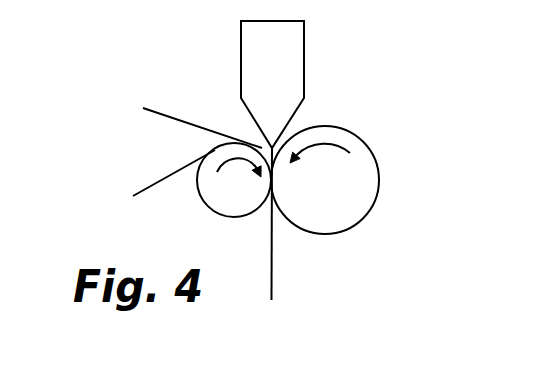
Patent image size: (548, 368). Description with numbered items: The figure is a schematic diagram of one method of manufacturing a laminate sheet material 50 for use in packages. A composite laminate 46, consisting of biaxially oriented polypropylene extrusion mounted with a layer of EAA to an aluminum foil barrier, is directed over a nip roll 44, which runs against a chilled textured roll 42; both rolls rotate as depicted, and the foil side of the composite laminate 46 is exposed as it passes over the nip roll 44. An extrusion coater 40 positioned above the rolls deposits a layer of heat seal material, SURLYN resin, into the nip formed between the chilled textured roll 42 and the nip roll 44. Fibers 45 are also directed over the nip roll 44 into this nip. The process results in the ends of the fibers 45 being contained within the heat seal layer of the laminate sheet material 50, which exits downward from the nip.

The extrusion coater 40 is at (298, 46).
The chilled textured roll 42 is at (370, 181).
The nip roll 44 is at (218, 203).
The fibers 45 is at (167, 116).
The composite laminate 46 is at (152, 185).
The laminate sheet material 50 is at (273, 276).